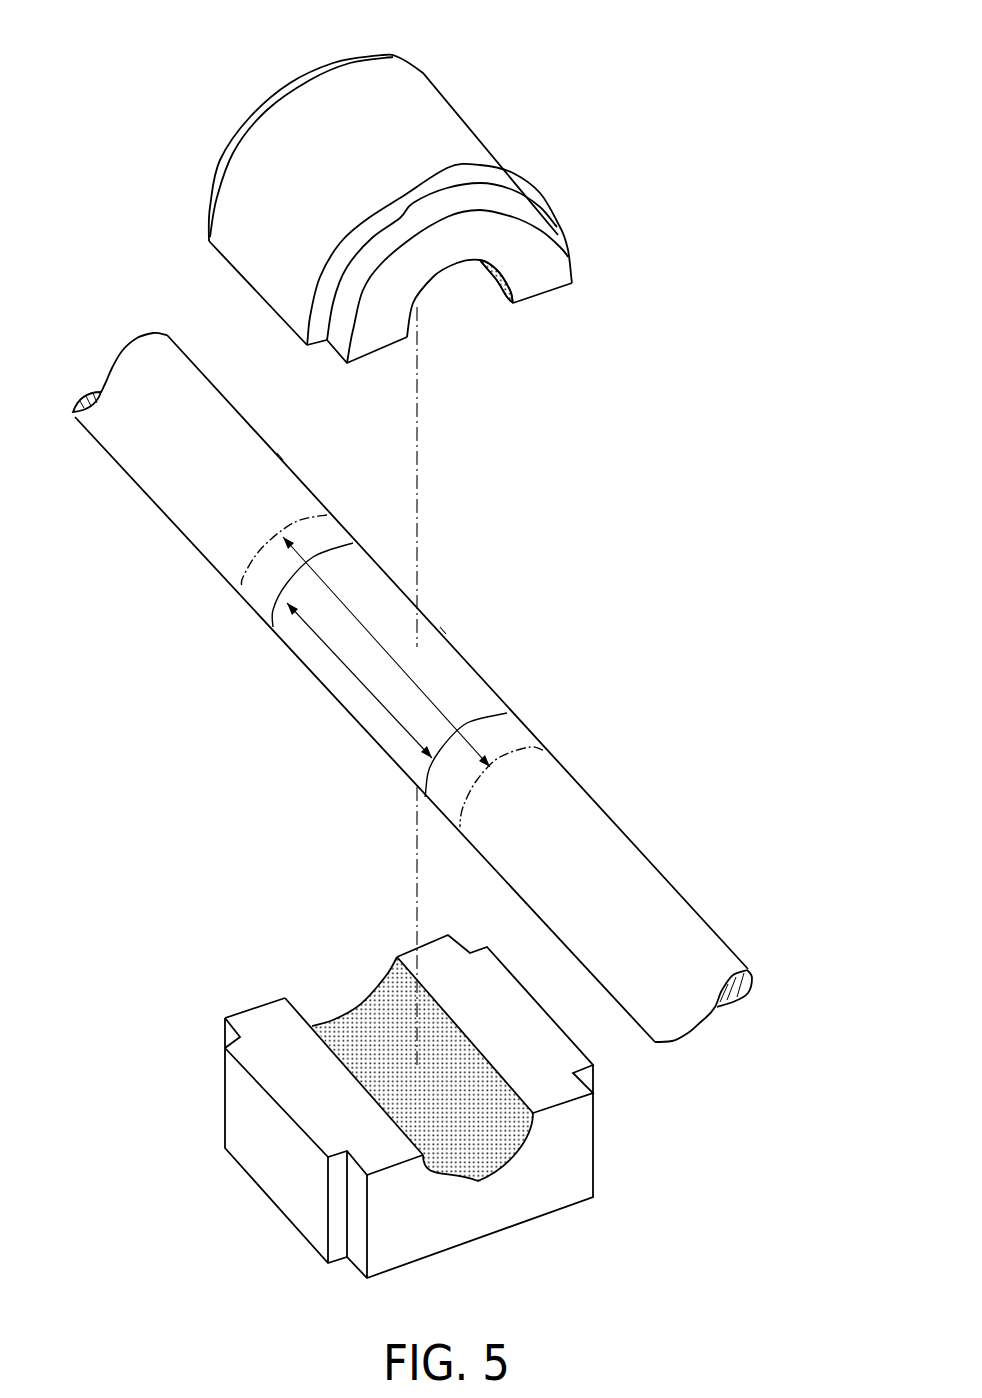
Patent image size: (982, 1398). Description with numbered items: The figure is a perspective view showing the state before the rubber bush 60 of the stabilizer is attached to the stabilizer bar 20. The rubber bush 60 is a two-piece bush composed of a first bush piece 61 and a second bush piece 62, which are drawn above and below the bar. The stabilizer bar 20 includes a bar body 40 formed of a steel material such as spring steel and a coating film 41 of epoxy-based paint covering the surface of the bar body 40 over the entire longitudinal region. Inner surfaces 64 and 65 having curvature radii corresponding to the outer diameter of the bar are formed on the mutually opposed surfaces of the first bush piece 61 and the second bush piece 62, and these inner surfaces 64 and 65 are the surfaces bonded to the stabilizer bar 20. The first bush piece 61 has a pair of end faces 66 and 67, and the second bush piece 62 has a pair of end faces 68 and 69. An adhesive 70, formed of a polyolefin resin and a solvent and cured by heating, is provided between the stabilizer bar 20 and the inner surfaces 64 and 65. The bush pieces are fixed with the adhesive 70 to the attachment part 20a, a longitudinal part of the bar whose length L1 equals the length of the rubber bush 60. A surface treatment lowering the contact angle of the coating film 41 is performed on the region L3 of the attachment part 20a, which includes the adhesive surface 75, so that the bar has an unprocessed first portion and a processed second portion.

The rubber bush 60 is at (406, 187).
The second bush piece 62 is at (259, 151).
The end face 69 is at (315, 65).
The end face 68 is at (542, 277).
The inner surface 65 is at (445, 290).
The adhesive 70 is at (497, 290).
The stabilizer bar 20 is at (437, 689).
The coating film 41 is at (210, 538).
The attachment part 20a is at (332, 678).
The adhesive surface 75 is at (482, 693).
The bar body 40 is at (752, 987).
The length of the attachment part L1 is at (377, 713).
The region L3 is at (413, 673).
The first bush piece 61 is at (402, 1116).
The inner surface 64 is at (477, 1100).
The end face 66 is at (443, 1220).
The end face 67 is at (260, 1007).